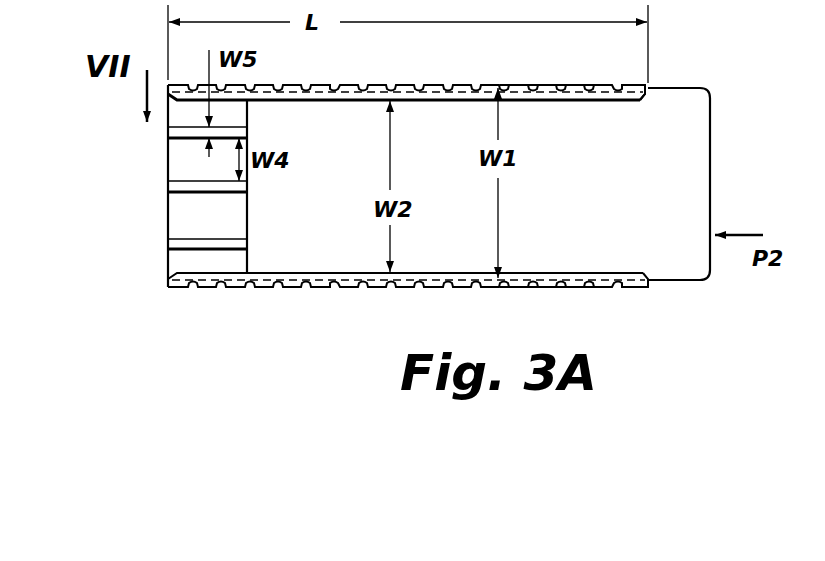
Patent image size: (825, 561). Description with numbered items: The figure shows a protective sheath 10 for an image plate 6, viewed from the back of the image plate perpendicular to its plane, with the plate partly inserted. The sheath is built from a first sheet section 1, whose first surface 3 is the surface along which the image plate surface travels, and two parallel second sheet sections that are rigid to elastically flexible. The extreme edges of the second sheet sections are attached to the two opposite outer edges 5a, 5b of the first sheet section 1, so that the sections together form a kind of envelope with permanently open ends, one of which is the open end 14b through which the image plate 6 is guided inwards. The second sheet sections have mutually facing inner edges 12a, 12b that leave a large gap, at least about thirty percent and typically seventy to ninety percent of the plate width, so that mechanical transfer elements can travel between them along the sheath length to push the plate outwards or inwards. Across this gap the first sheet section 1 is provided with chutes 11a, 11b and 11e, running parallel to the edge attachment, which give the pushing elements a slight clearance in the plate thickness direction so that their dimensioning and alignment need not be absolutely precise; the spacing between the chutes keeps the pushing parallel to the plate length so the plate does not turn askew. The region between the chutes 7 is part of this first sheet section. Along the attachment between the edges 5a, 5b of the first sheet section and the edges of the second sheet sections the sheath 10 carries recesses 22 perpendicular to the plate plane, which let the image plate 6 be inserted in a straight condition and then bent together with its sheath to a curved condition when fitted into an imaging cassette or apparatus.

The first sheet section 1 is at (230, 232).
The first surface 3 is at (183, 232).
The outer edge of the first sheet section 5a is at (355, 86).
The outer edge of the first sheet section 5b is at (293, 292).
The image plate 6 is at (603, 204).
The groove 7 is at (187, 167).
The protective sheath 10 is at (207, 287).
The chute 11a is at (183, 139).
The chute 11b is at (187, 249).
The chute 11e is at (187, 193).
The inner edge of the second sheet section 12a is at (607, 101).
The inner edge of the second sheet section 12b is at (614, 273).
The open end 14b is at (656, 85).
The recesses 22 is at (573, 86).